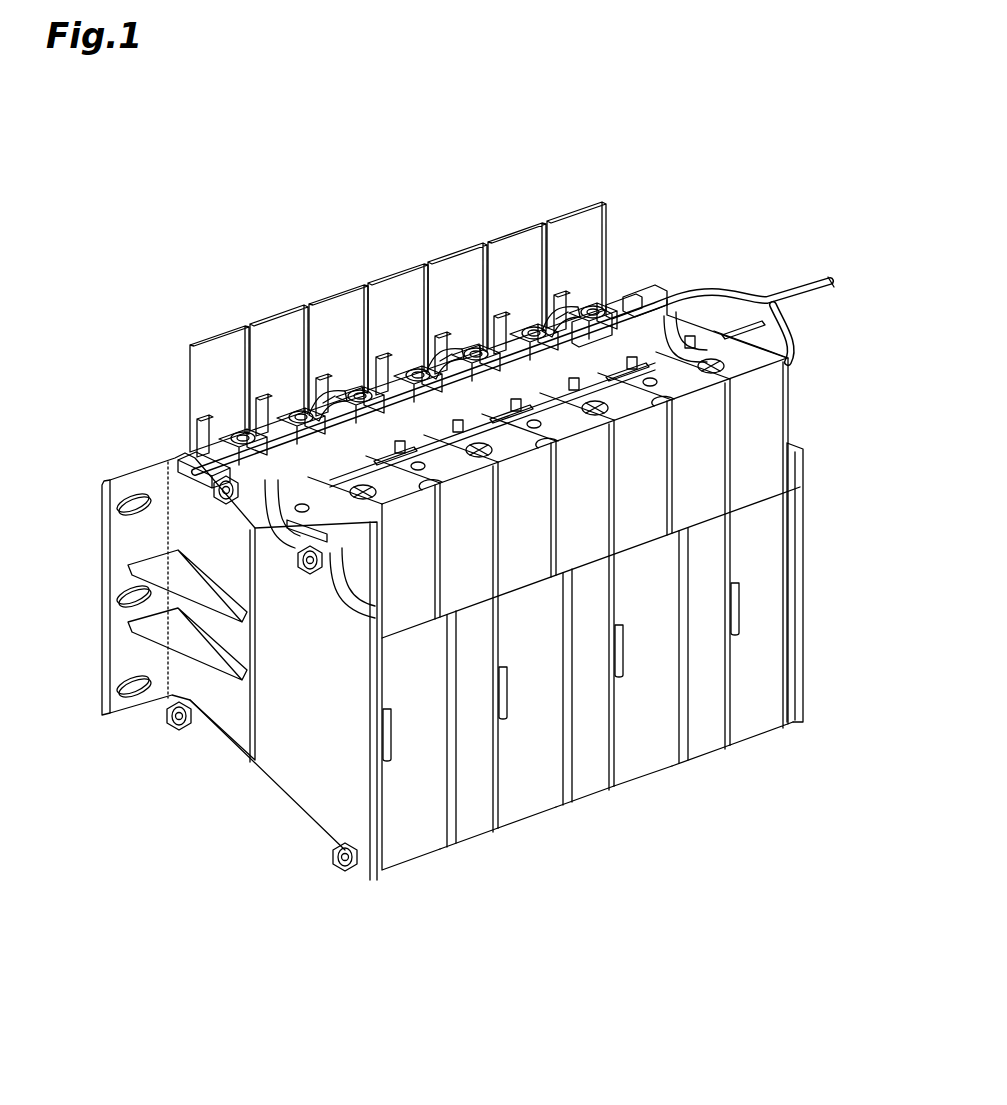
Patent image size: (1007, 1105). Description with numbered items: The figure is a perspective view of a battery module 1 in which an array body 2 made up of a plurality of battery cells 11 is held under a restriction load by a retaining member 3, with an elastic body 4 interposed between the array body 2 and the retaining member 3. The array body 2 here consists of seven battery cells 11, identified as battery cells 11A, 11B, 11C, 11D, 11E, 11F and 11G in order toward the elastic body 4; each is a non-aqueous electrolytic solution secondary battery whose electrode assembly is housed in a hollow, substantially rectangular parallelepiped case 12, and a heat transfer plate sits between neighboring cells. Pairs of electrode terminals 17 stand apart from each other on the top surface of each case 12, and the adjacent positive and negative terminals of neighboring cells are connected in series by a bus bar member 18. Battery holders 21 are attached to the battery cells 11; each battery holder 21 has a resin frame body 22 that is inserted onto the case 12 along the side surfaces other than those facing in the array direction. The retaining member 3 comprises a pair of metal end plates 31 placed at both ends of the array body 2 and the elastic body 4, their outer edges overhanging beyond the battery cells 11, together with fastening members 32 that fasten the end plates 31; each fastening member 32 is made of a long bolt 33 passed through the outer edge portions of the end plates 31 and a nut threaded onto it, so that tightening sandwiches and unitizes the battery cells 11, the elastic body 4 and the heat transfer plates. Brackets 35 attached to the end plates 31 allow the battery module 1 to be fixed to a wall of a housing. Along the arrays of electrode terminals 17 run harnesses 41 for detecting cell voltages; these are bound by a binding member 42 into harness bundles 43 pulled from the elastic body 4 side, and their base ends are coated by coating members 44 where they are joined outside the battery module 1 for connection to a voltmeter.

The battery module 1 is at (160, 192).
The array body 2 is at (150, 366).
The retaining member 3 is at (456, 582).
The elastic body 4 is at (616, 306).
The battery cells 11 is at (522, 626).
The battery cell 11A is at (388, 880).
The battery cell 11B is at (472, 843).
The battery cell 11C is at (543, 823).
The battery cell 11D is at (583, 803).
The battery cell 11E is at (650, 776).
The battery cell 11F is at (697, 756).
The battery cell 11G is at (780, 730).
The case 12 is at (283, 515).
The electrode terminals 17 is at (243, 436).
The bus bar member 18 is at (310, 400).
The battery holders 21 is at (205, 320).
The frame body 22 is at (422, 792).
The end plates 31 is at (805, 465).
The fastening members 32 is at (208, 470).
The bolt 33 is at (215, 500).
The brackets 35 is at (105, 530).
The harnesses 41 is at (367, 400).
The binding member 42 is at (367, 400).
The harness bundles 43 is at (598, 306).
The coating members 44 is at (728, 293).